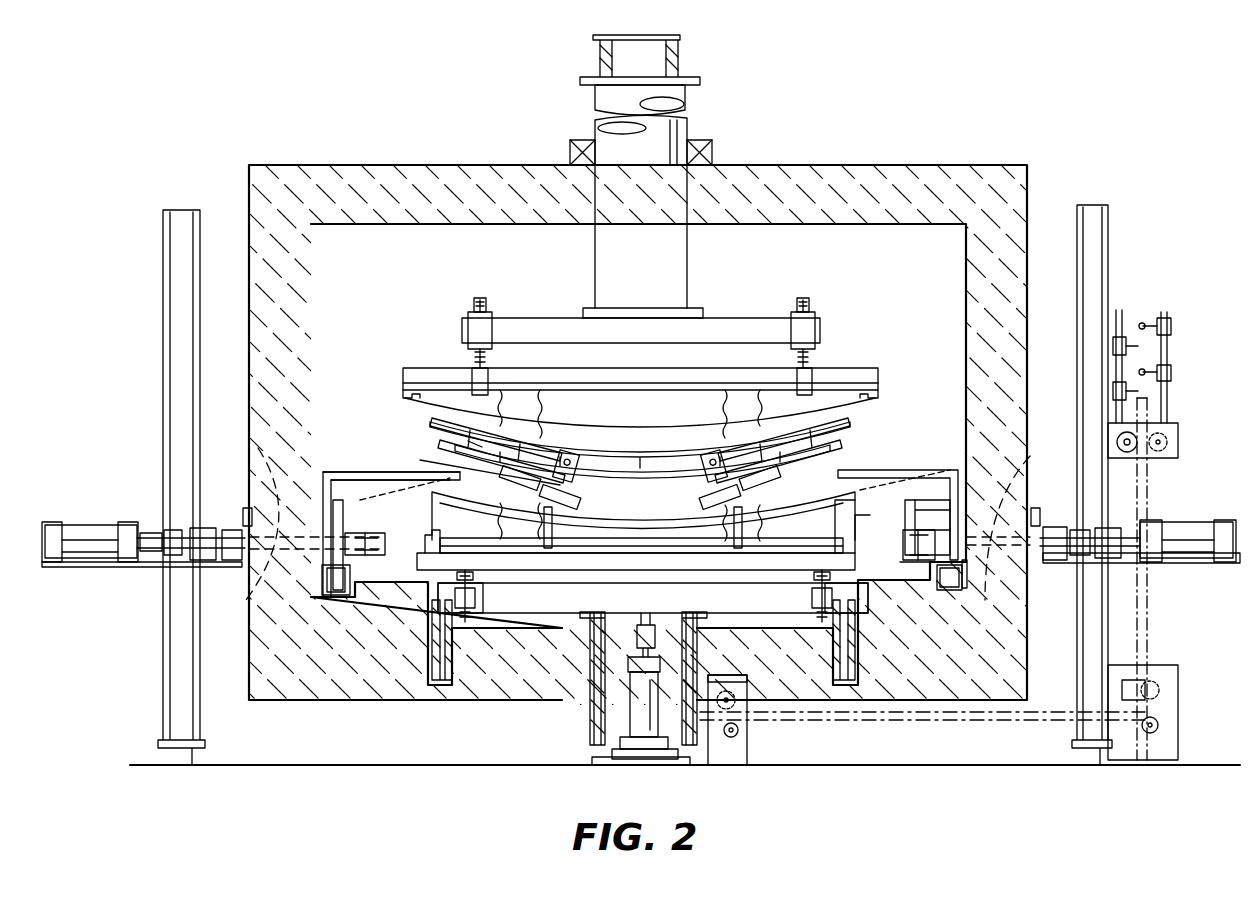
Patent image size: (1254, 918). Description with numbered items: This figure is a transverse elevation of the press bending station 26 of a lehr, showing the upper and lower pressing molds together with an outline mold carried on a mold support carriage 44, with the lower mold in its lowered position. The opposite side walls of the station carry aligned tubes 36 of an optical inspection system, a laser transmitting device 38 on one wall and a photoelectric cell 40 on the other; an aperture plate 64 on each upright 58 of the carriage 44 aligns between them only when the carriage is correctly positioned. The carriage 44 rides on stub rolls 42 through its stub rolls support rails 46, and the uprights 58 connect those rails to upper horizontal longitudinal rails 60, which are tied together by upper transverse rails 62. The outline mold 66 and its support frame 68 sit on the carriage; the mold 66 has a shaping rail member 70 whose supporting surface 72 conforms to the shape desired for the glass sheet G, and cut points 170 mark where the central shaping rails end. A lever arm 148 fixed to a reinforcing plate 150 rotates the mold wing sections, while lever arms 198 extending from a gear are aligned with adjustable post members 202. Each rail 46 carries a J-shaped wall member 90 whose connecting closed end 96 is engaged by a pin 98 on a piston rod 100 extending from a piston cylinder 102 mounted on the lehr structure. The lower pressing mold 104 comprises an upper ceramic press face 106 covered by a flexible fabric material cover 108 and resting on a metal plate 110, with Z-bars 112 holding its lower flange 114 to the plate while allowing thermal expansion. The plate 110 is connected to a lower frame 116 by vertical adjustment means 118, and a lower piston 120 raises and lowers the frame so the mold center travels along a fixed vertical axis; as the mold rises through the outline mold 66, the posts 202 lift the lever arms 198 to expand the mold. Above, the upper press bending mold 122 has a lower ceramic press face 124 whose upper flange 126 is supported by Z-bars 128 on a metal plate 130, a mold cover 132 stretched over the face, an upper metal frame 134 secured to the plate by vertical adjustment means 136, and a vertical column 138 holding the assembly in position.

The press bending station 26 is at (893, 118).
The tubes 36 is at (258, 456).
The laser transmitting device 38 is at (1040, 510).
The photoelectric cell 40 is at (244, 510).
The stub rolls 42 is at (945, 590).
The mold support carriage 44 is at (950, 470).
The stub rolls support rails 46 is at (958, 590).
The uprights 58 is at (328, 480).
The upper horizontal longitudinal rails 60 is at (376, 472).
The upper transverse rails 62 is at (410, 488).
The aperture plate 64 is at (344, 514).
The outline mold 66 is at (412, 434).
The support frame 68 is at (606, 480).
The shaping rail member 70 is at (842, 438).
The supporting surface 72 is at (740, 448).
The J-shaped wall member 90 is at (903, 536).
The connecting closed end 96 is at (398, 528).
The pin 98 is at (352, 572).
The piston rod 100 is at (262, 592).
The piston cylinder 102 is at (90, 525).
The lower pressing mold 104 is at (848, 516).
The upper ceramic press face 106 is at (650, 520).
The flexible fabric material cover 108 is at (552, 548).
The metal plate 110 is at (628, 554).
The Z-bars 112 is at (432, 526).
The lower flange 114 is at (440, 560).
The lower frame 116 is at (768, 612).
The vertical adjustment means 118 is at (478, 580).
The lower piston 120 is at (630, 716).
The upper press bending mold 122 is at (840, 285).
The lower ceramic press face 124 is at (610, 430).
The upper flange 126 is at (440, 380).
The Z-bars 128 is at (403, 396).
The metal plate 130 is at (850, 372).
The mold cover 132 is at (565, 402).
The upper metal frame 134 is at (634, 340).
The vertical adjustment means 136 is at (492, 358).
The vertical column 138 is at (595, 272).
The lever arm 148 is at (560, 458).
The reinforcing plate 150 is at (440, 464).
The cut point 170 is at (526, 456).
The lever arms 198 is at (522, 486).
The adjustable post members 202 is at (548, 497).
The glass sheet G is at (670, 452).